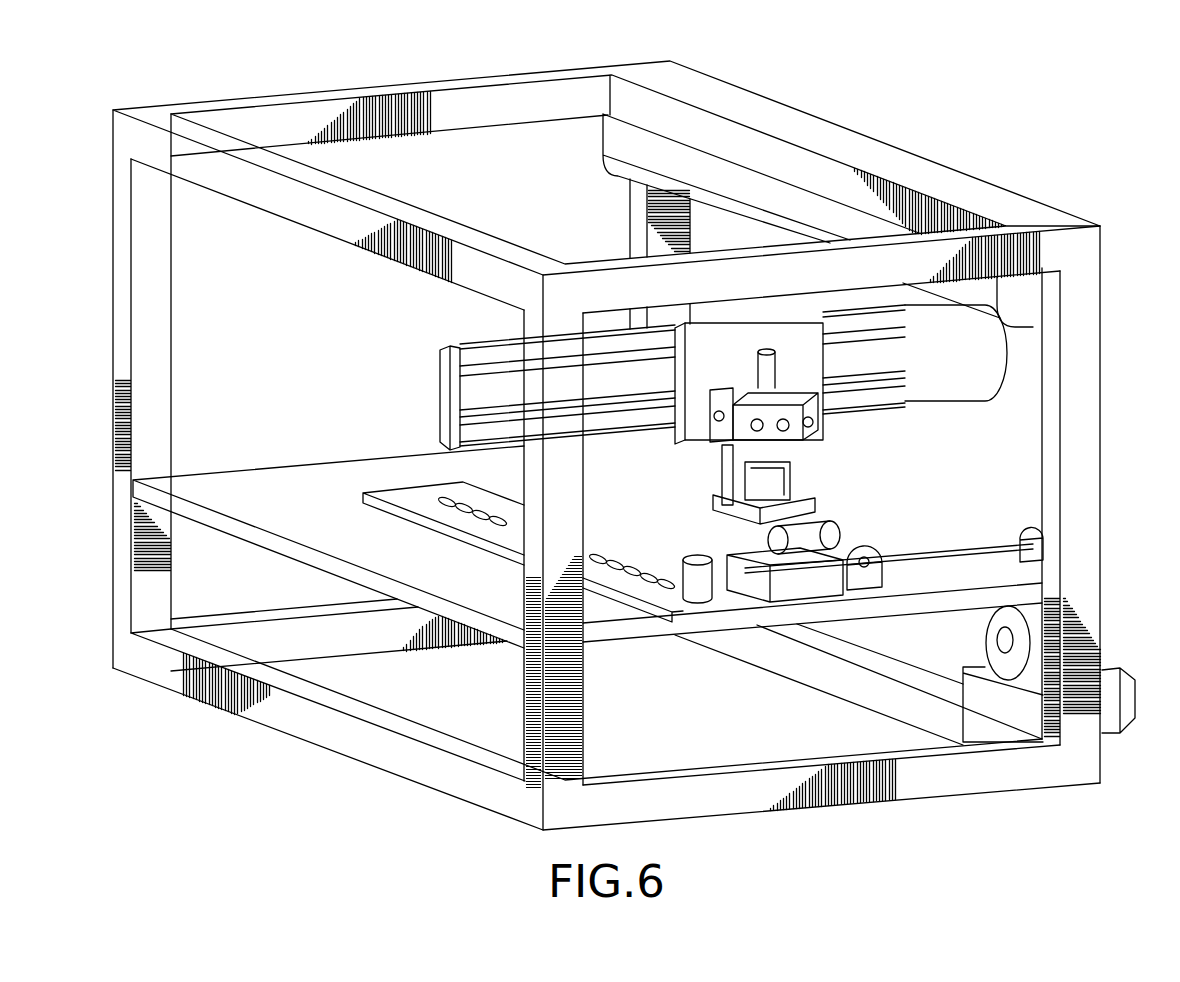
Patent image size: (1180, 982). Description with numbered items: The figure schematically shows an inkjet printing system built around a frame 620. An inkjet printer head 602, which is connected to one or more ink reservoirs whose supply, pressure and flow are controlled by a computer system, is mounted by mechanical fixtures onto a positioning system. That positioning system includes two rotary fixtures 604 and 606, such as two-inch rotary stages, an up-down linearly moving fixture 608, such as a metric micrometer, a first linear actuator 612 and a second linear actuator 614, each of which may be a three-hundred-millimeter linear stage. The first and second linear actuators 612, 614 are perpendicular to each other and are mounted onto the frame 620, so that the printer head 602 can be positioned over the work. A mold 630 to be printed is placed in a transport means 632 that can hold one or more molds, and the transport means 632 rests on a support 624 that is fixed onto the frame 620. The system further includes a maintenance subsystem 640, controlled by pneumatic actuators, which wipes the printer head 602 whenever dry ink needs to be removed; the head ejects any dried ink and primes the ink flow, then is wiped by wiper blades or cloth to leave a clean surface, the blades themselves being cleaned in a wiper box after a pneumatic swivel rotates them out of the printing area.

The frame 620 is at (272, 93).
The second linear actuator 614 is at (623, 150).
The first linear actuator 612 is at (440, 355).
The up-down linearly moving fixture 608 is at (768, 370).
The rotary fixture 606 is at (775, 380).
The rotary fixture 604 is at (773, 433).
The inkjet printer head 602 is at (705, 500).
The support 624 is at (250, 482).
The transport means 632 is at (505, 535).
The mold 630 is at (698, 583).
The maintenance subsystem 640 is at (810, 565).